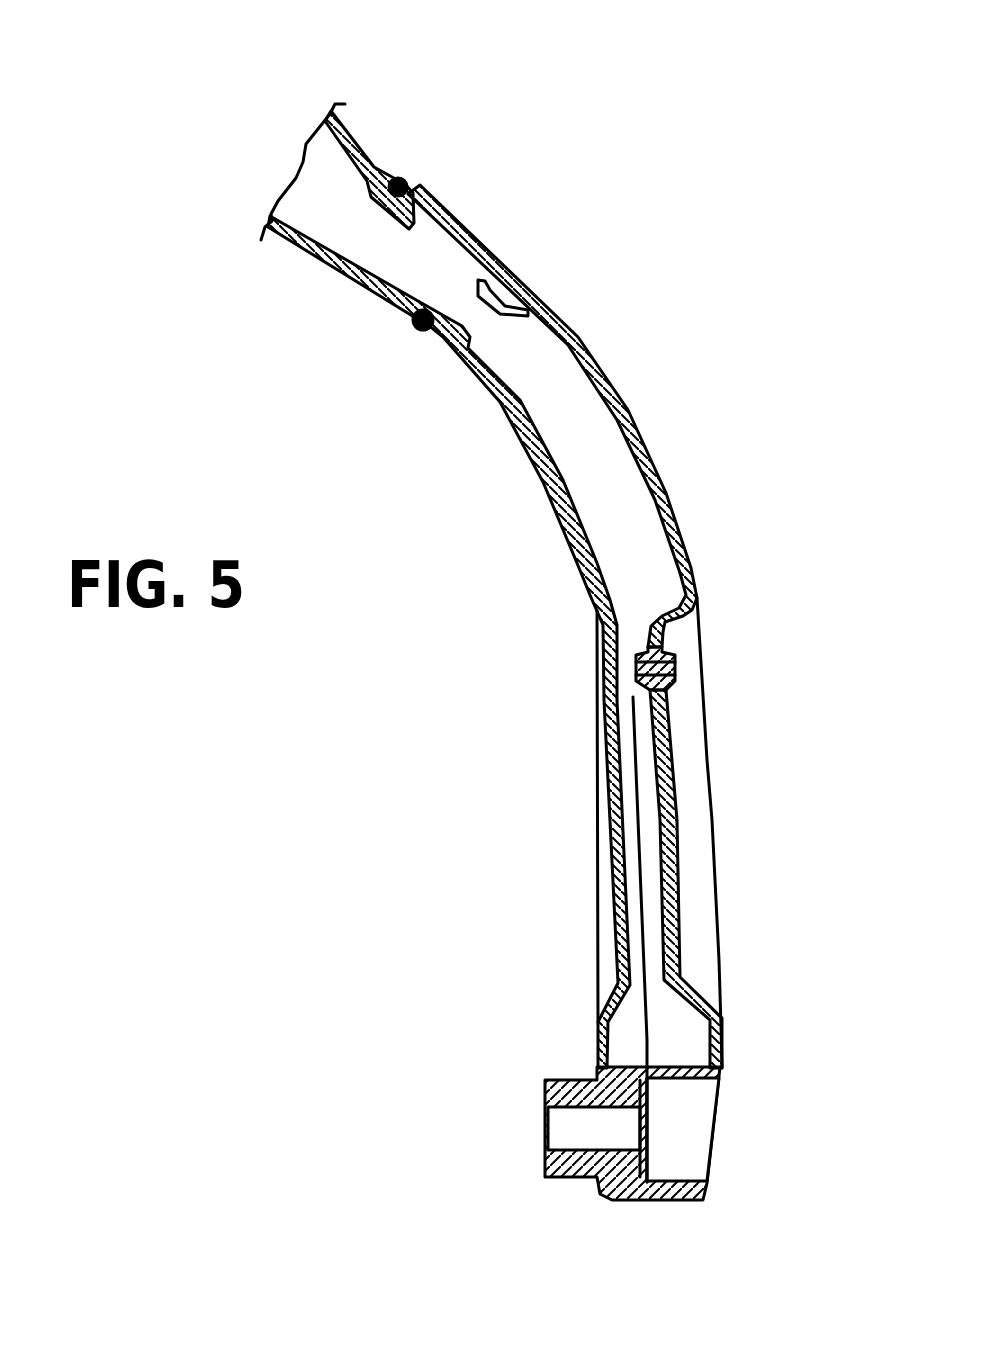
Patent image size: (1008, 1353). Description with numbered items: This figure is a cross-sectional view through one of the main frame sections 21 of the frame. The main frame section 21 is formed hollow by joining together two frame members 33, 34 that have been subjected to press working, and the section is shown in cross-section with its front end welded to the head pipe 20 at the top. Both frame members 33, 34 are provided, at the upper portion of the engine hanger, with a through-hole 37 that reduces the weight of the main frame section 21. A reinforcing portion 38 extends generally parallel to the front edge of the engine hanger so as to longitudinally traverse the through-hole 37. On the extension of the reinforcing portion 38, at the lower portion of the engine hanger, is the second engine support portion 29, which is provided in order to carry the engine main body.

The head pipe 20 is at (362, 147).
The main frame section 21 is at (570, 626).
The second engine support portion 29 is at (620, 1201).
The frame member 33 is at (780, 355).
The frame member 34 is at (627, 413).
The through-hole 37 is at (697, 913).
The reinforcing portion 38 is at (677, 860).